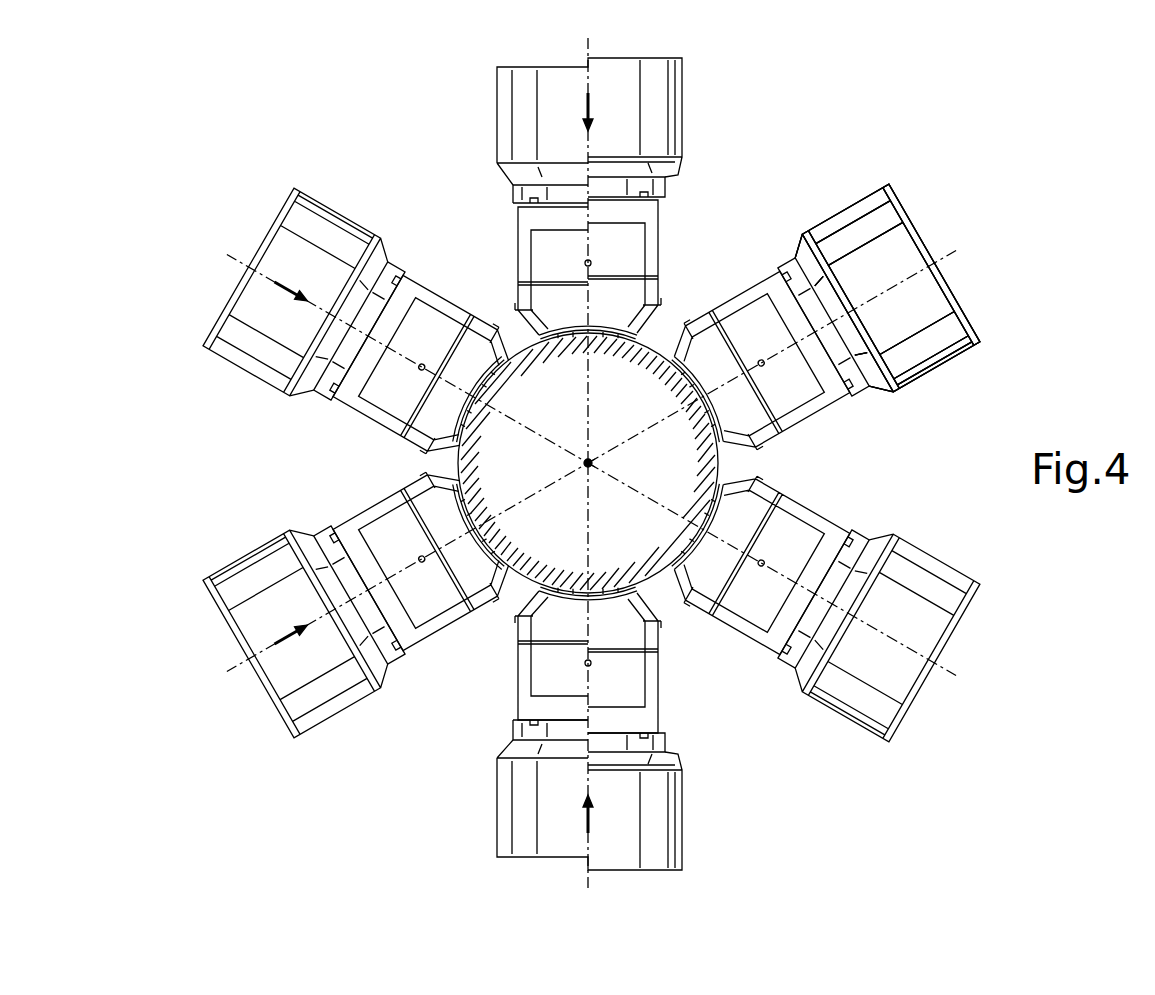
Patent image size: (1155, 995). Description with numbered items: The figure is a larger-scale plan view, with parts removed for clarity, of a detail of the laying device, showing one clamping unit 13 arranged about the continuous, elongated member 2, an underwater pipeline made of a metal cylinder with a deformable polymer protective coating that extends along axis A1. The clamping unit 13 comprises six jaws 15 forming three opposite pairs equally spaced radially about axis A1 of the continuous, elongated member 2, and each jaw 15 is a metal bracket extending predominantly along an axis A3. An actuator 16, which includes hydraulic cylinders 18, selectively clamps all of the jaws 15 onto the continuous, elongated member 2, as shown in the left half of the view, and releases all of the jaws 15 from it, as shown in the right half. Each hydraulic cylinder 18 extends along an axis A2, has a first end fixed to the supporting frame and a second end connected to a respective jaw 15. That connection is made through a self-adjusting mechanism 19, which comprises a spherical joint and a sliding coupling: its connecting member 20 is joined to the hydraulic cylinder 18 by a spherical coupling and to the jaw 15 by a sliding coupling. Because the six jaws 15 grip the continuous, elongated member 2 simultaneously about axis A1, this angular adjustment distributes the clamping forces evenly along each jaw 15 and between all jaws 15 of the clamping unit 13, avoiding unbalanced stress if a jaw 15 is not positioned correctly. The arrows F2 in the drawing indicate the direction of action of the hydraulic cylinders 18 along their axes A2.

The continuous, elongated member 2 is at (668, 328).
The clamping unit 13 is at (893, 118).
The jaw 15 is at (530, 337).
The actuator 16 is at (897, 158).
The hydraulic cylinder 18 is at (510, 130).
The self-adjusting mechanism 19 is at (503, 200).
The connecting member 20 is at (512, 287).
The axis A1 is at (590, 458).
The axis A2 is at (590, 54).
The axis A3 is at (586, 262).
The direction of movement F2 is at (585, 115).